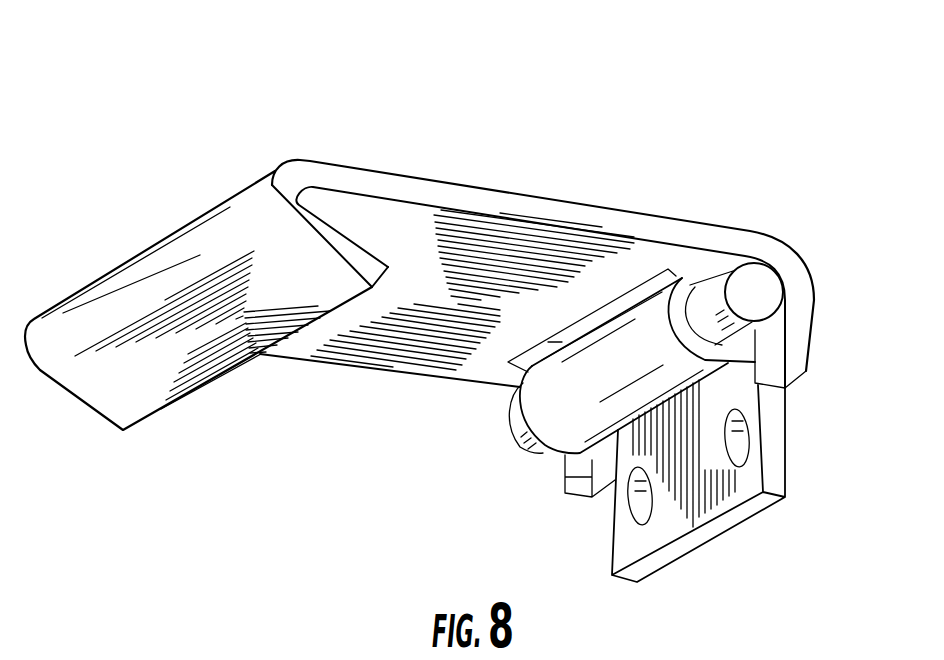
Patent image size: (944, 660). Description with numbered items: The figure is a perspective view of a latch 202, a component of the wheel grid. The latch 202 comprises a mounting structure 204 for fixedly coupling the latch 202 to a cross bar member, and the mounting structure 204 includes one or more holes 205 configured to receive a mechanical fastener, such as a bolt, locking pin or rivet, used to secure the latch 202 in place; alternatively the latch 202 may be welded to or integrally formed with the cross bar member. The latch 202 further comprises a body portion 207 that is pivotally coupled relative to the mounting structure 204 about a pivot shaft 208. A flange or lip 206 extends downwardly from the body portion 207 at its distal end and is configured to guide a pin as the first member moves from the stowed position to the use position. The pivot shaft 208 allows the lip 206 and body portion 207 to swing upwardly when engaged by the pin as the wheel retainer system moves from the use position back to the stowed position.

The latch 202 is at (537, 100).
The mounting structure 204 is at (772, 470).
The holes 205 is at (745, 432).
The lip 206 is at (127, 407).
The body portion 207 is at (580, 208).
The pivot shaft 208 is at (758, 288).